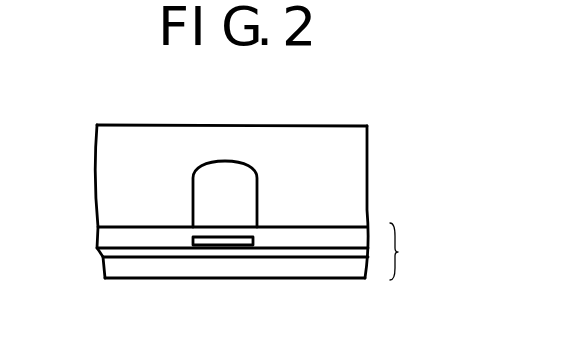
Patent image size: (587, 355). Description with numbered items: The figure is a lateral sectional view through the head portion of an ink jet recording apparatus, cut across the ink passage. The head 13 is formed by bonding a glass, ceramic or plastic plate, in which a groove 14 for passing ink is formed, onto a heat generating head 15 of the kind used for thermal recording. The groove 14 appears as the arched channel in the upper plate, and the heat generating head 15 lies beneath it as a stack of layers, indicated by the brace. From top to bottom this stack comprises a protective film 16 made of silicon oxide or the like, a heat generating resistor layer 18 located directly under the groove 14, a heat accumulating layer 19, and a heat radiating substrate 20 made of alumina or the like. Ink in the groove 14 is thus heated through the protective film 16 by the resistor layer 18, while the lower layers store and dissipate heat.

The head 13 is at (141, 125).
The groove 14 is at (243, 160).
The heat generating head 15 is at (415, 251).
The protective film 16 is at (273, 233).
The heat generating resistor layer 18 is at (256, 243).
The heat accumulating layer 19 is at (336, 250).
The heat radiating substrate 20 is at (327, 272).